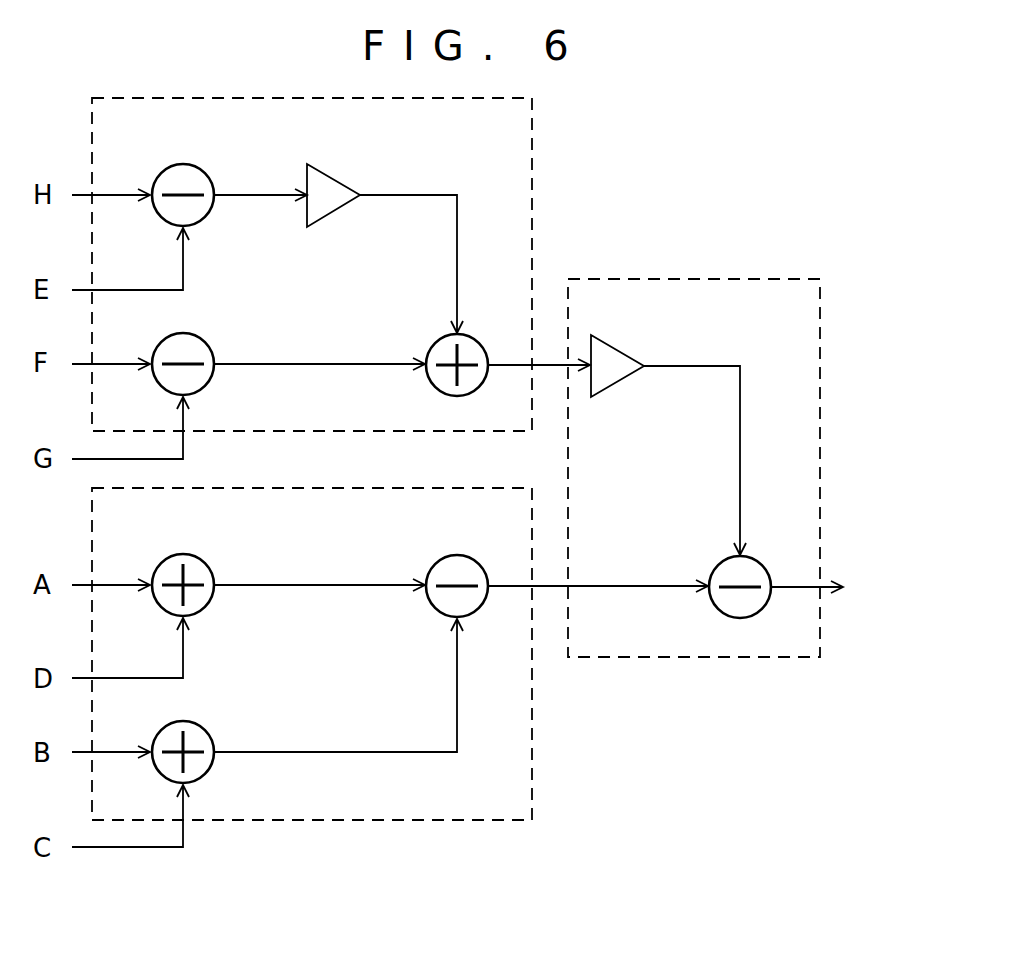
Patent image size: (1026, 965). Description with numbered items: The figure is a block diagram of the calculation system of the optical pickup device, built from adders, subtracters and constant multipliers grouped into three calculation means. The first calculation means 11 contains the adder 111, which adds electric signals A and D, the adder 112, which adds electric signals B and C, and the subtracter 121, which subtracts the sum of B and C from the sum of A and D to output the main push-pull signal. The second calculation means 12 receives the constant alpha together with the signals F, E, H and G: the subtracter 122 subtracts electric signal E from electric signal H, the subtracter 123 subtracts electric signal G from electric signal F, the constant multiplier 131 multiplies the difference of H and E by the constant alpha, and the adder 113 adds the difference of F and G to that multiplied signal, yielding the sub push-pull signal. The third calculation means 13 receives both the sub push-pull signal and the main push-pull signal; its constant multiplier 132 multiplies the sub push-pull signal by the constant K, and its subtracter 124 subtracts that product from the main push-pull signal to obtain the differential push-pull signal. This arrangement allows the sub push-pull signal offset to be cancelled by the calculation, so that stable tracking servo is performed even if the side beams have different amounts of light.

The first calculation means 11 is at (402, 820).
The second calculation means 12 is at (532, 150).
The third calculation means 13 is at (745, 279).
The adder 111 is at (238, 535).
The adder 112 is at (236, 698).
The adder 113 is at (478, 337).
The subtracter 121 is at (450, 557).
The subtracter 122 is at (238, 145).
The subtracter 123 is at (238, 312).
The subtracter 124 is at (762, 560).
The constant multiplier 131 is at (333, 177).
The constant multiplier 132 is at (622, 346).